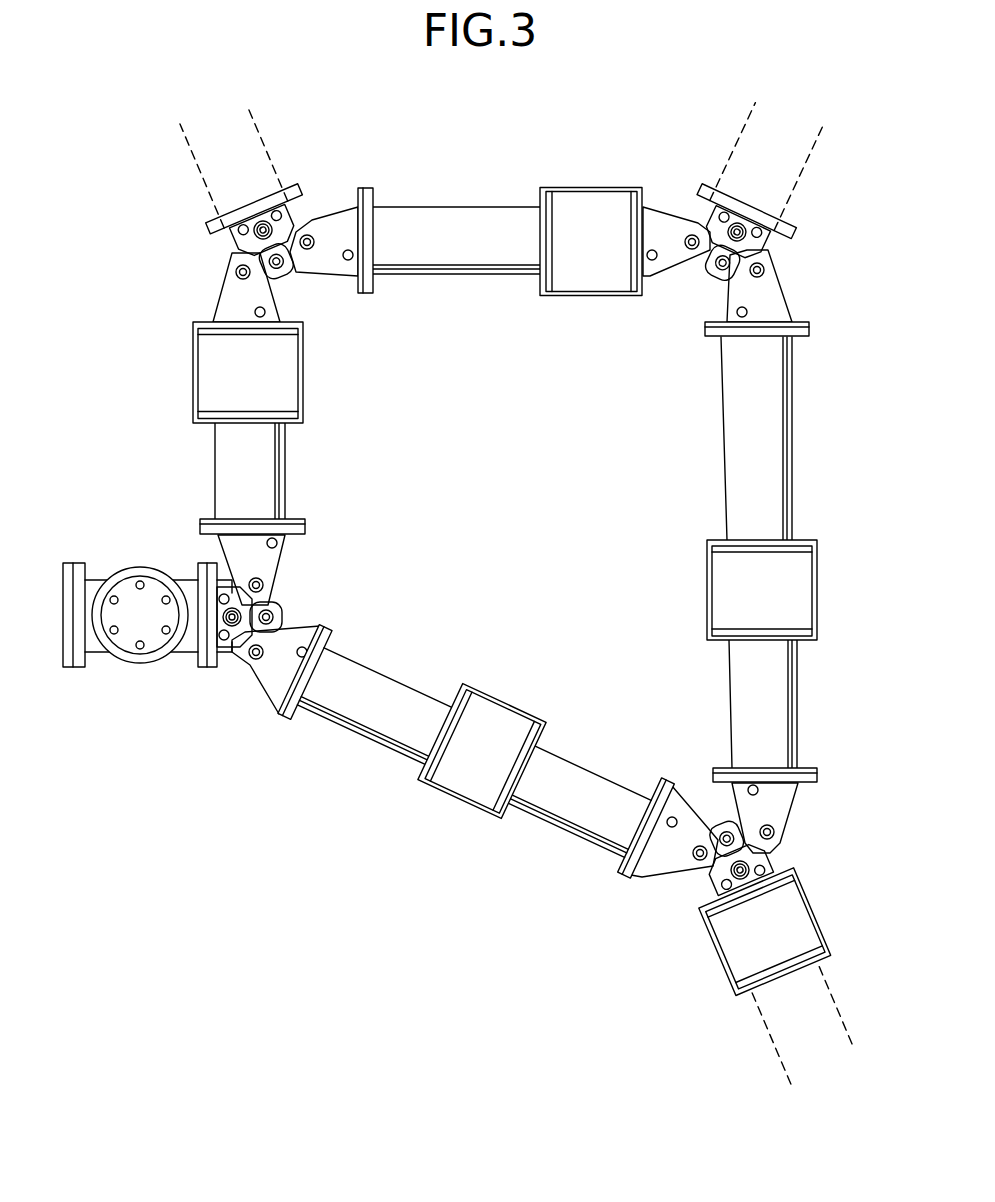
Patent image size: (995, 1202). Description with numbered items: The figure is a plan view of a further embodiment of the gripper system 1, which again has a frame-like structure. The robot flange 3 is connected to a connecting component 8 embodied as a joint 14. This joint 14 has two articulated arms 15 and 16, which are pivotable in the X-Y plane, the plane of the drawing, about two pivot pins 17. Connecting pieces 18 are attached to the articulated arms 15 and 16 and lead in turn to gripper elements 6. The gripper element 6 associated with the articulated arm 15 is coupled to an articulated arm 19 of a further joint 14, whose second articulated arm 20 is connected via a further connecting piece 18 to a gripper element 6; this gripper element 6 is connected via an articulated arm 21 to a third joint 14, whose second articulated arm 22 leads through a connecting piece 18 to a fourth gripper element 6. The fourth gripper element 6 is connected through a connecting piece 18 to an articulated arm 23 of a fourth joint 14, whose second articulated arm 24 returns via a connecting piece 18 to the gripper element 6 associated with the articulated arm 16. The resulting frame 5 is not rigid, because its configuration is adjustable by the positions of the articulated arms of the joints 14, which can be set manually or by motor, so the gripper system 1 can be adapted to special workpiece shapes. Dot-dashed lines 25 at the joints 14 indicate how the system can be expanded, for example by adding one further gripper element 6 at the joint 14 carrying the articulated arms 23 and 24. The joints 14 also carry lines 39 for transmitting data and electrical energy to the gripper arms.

The gripper system 1 is at (288, 829).
The robot flange 3 is at (118, 558).
The frame 5 is at (383, 743).
The gripper element 6 is at (598, 187).
The connecting component 8 is at (223, 665).
The joint 14 is at (228, 237).
The articulated arm 15 is at (230, 550).
The articulated arm 16 is at (277, 673).
The pivot pin 17 is at (257, 653).
The connecting piece 18 is at (465, 220).
The articulated arm 19 is at (228, 298).
The articulated arm 20 is at (337, 222).
The articulated arm 21 is at (658, 223).
The articulated arm 22 is at (773, 303).
The articulated arm 23 is at (780, 810).
The articulated arm 24 is at (662, 858).
The dot-dashed lines 25 is at (258, 128).
The lines 39 is at (727, 283).